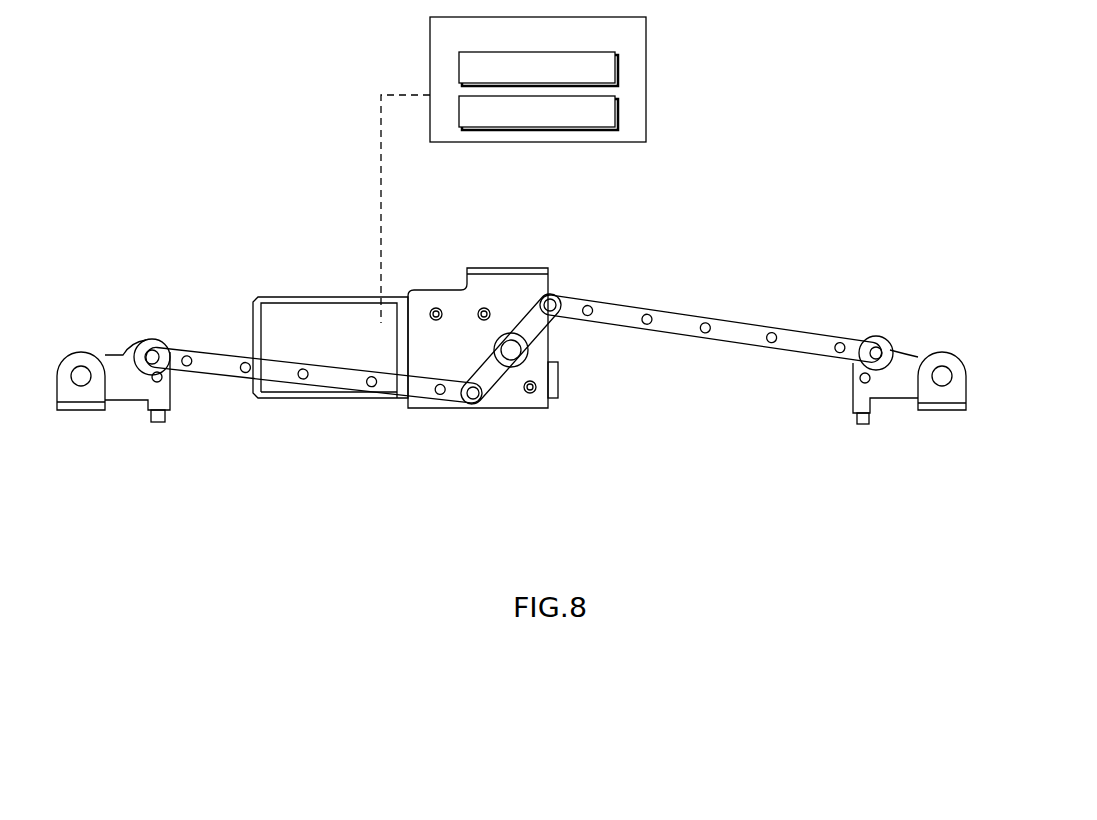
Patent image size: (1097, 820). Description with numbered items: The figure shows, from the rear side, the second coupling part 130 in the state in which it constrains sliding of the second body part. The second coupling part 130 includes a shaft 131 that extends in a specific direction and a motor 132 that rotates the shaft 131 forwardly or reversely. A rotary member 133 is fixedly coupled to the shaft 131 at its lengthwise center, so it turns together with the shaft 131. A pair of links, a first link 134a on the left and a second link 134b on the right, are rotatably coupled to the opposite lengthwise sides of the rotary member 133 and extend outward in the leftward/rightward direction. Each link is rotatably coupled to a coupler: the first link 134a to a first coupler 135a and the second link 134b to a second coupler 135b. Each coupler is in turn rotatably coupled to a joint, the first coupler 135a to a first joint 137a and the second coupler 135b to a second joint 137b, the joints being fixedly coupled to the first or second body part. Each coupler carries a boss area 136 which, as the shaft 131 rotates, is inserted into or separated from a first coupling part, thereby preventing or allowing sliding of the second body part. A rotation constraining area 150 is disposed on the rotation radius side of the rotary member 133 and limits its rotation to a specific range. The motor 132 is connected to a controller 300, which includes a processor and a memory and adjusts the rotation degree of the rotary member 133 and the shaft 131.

The controller 300 is at (646, 66).
The second coupling part 130 is at (447, 262).
The shaft 131 is at (509, 335).
The motor 132 is at (332, 312).
The rotary member 133 is at (557, 327).
The first link 134a is at (345, 383).
The second link 134b is at (678, 325).
The first coupler 135a is at (159, 392).
The second coupler 135b is at (893, 390).
The boss area 136 is at (855, 418).
The first joint 137a is at (90, 393).
The second joint 137b is at (943, 360).
The rotation constraining area 150 is at (560, 385).